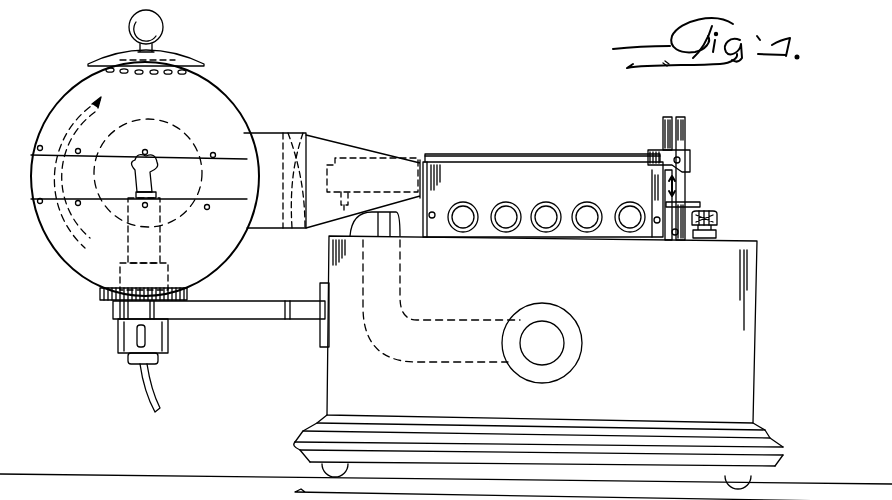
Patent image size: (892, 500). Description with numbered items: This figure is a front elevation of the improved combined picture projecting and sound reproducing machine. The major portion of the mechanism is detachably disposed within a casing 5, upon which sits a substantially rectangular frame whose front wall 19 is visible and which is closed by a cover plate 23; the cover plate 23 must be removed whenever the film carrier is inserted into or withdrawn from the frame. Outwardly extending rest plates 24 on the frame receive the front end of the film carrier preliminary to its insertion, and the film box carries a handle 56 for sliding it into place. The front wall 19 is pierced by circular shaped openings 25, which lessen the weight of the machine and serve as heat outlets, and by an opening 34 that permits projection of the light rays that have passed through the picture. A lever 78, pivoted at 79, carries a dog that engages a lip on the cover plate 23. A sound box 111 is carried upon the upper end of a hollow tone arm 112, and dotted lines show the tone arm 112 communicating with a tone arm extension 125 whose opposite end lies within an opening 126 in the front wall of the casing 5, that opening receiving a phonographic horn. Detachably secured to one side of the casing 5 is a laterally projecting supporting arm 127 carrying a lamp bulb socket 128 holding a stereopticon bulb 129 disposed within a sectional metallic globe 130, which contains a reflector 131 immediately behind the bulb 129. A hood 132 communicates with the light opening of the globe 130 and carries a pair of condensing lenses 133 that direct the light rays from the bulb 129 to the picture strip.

The casing 5 is at (328, 368).
The front wall 19 is at (574, 186).
The cover plate 23 is at (441, 160).
The rest plates 24 is at (697, 205).
The circular shaped openings 25 is at (546, 205).
The opening 34 is at (465, 210).
The handle 56 is at (679, 185).
The lever 78 is at (667, 118).
The pivot 79 is at (684, 158).
The sound box 111 is at (372, 175).
The tone arm 112 is at (352, 200).
The tone arm extension 125 is at (464, 320).
The opening 126 is at (566, 330).
The supporting arm 127 is at (233, 312).
The lamp bulb socket 128 is at (122, 313).
The stereopticon bulb 129 is at (200, 86).
The sectional metallic globe 130 is at (187, 137).
The reflector 131 is at (74, 117).
The hood 132 is at (330, 146).
The condensing lenses 133 is at (292, 132).